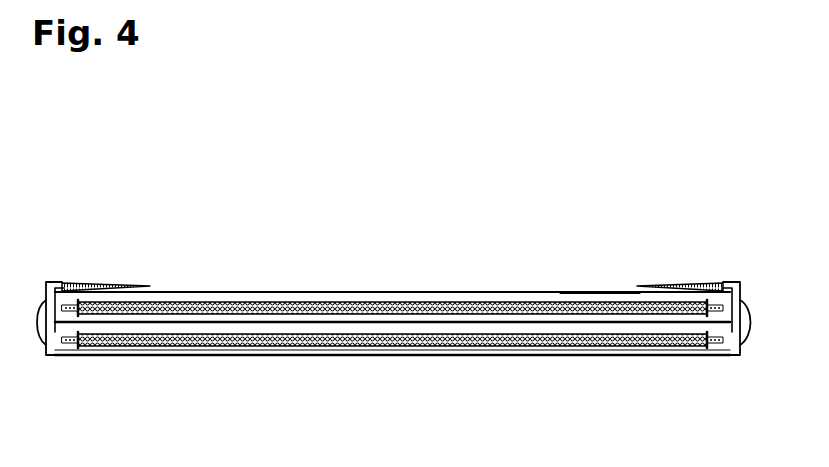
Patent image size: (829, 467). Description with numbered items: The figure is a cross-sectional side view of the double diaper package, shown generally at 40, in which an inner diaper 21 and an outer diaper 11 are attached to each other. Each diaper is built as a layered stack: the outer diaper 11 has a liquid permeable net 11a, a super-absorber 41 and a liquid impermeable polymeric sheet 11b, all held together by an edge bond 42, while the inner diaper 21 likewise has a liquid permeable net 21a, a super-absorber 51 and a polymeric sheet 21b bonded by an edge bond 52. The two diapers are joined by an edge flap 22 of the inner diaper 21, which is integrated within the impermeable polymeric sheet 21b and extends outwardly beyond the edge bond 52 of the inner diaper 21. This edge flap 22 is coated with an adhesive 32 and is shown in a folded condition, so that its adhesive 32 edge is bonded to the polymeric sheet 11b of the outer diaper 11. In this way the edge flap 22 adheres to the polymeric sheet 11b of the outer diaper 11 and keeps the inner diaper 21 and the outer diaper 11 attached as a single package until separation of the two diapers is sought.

The cross-sectional view of the double diaper package 40 is at (358, 187).
The outer diaper 11 is at (360, 282).
The liquid permeable net 11a is at (150, 316).
The liquid impermeable polymeric sheet 11b is at (500, 293).
The super-absorber 41 is at (622, 291).
The adhesive 32 is at (103, 292).
The edge bond 42 is at (72, 290).
The edge flap 22 is at (45, 340).
The inner diaper 21 is at (534, 363).
The liquid permeable net 21a is at (472, 352).
The polymeric sheet 21b is at (240, 323).
The super-absorber 51 is at (380, 342).
The edge bond 52 is at (62, 347).